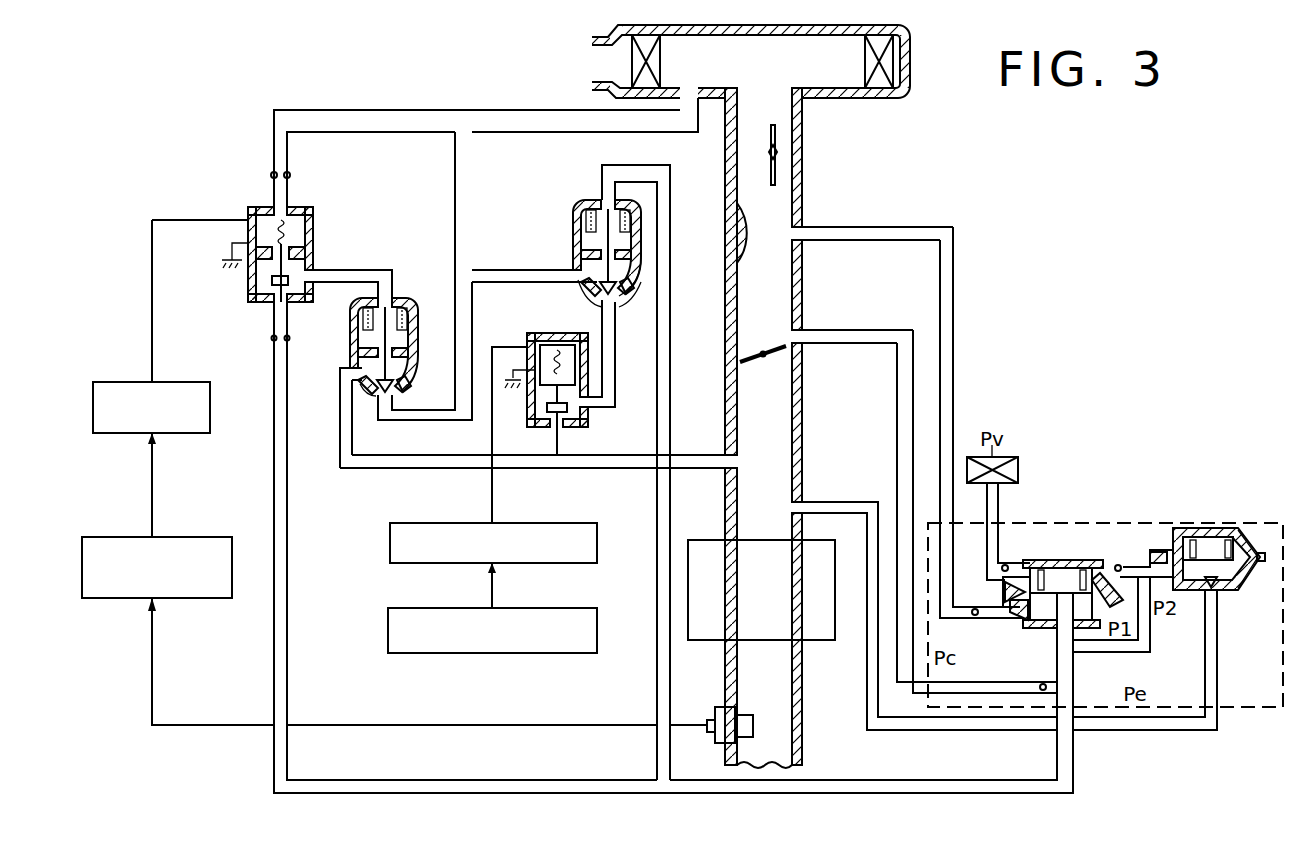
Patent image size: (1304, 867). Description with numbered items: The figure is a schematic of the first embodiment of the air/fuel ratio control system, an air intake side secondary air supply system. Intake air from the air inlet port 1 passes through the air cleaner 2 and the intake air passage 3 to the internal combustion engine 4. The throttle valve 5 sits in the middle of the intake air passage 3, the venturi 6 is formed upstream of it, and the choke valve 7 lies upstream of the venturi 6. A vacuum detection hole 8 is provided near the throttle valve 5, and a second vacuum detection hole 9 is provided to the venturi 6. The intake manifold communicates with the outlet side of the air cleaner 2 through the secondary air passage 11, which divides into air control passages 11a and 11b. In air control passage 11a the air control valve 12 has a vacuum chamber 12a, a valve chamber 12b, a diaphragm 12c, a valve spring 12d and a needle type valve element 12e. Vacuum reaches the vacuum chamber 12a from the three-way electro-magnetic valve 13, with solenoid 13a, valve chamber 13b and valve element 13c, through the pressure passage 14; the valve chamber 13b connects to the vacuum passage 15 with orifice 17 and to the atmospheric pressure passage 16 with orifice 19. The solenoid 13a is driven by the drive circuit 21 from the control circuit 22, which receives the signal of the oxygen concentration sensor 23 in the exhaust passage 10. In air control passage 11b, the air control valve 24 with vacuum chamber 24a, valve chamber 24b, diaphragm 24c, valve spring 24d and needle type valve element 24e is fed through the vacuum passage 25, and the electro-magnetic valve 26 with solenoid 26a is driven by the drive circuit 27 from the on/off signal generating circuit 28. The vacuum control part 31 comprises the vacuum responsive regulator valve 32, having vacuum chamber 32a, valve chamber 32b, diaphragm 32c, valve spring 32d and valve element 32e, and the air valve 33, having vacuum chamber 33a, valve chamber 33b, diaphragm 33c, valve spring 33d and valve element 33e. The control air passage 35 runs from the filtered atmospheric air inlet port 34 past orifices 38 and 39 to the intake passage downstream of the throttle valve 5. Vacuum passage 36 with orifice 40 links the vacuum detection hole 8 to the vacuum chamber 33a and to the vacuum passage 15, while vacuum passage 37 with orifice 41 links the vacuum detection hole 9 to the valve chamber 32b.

The air inlet port 1 is at (600, 62).
The air cleaner 2 is at (660, 52).
The intake air passage 3 is at (795, 380).
The internal combustion engine 4 is at (710, 640).
The throttle valve 5 is at (760, 352).
The venturi 6 is at (744, 225).
The choke valve 7 is at (776, 165).
The vacuum detection hole 8 is at (792, 330).
The second vacuum detection hole 9 is at (792, 232).
The exhaust passage 10 is at (802, 707).
The air intake side secondary air passage 11 is at (455, 227).
The air control passage 11a is at (472, 300).
The air control passage 11b is at (615, 375).
The air control valve 12 is at (357, 318).
The vacuum chamber 12a is at (393, 305).
The valve chamber 12b is at (405, 392).
The diaphragm 12c is at (363, 325).
The valve spring 12d is at (418, 320).
The needle type valve element 12e is at (370, 400).
The three-way electro-magnetic valve 13 is at (313, 262).
The solenoid 13a is at (318, 225).
The valve chamber 13b is at (233, 262).
The valve element 13c is at (262, 283).
The pressure passage 14 is at (360, 270).
The vacuum passage 15 is at (287, 496).
The atmospheric pressure passage 16 is at (310, 113).
The orifice 17 is at (272, 338).
The orifice 19 is at (275, 170).
The drive circuit 21 is at (210, 400).
The control circuit 22 is at (215, 537).
The oxygen concentration sensor 23 is at (712, 740).
The air control valve 24 is at (566, 218).
The vacuum chamber 24a is at (590, 208).
The valve chamber 24b is at (638, 290).
The diaphragm 24c is at (595, 235).
The valve spring 24d is at (643, 211).
The needle type valve element 24e is at (594, 290).
The vacuum passage 25 is at (672, 395).
The electro-magnetic valve 26 is at (592, 420).
The solenoid 26a is at (580, 352).
The drive circuit 27 is at (598, 547).
The on/off signal generating circuit 28 is at (598, 640).
The vacuum control part 31 is at (1112, 523).
The vacuum responsive regulator valve 32 is at (1086, 558).
The vacuum chamber 32a is at (1004, 590).
The valve chamber 32b is at (1040, 635).
The diaphragm 32c is at (1025, 612).
The valve spring 32d is at (1048, 560).
The valve element 32e is at (1078, 615).
The air valve 33 is at (1280, 650).
The vacuum chamber 33a is at (1240, 530).
The valve chamber 33b is at (1250, 574).
The diaphragm 33c is at (1170, 600).
The valve spring 33d is at (1192, 530).
The valve element 33e is at (1218, 600).
The atmospheric air inlet port 34 is at (1018, 467).
The control air passage 35 is at (987, 552).
The vacuum passage 36 is at (897, 430).
The vacuum passage 37 is at (953, 340).
The orifice 38 is at (1005, 564).
The orifice 39 is at (1118, 565).
The orifice 40 is at (1046, 687).
The orifice 41 is at (975, 615).